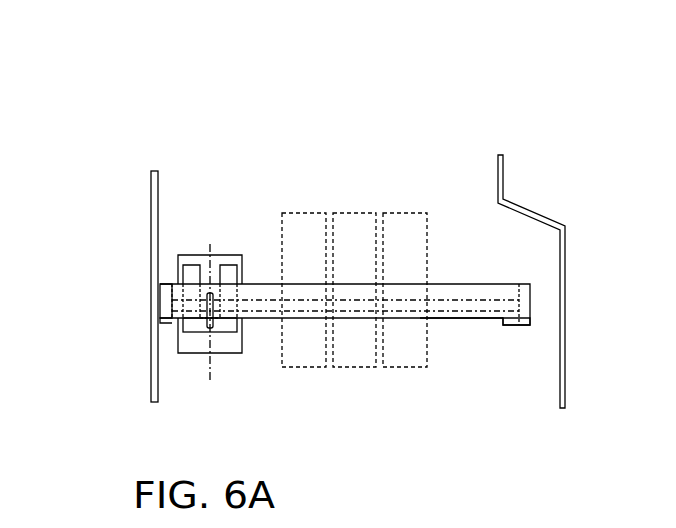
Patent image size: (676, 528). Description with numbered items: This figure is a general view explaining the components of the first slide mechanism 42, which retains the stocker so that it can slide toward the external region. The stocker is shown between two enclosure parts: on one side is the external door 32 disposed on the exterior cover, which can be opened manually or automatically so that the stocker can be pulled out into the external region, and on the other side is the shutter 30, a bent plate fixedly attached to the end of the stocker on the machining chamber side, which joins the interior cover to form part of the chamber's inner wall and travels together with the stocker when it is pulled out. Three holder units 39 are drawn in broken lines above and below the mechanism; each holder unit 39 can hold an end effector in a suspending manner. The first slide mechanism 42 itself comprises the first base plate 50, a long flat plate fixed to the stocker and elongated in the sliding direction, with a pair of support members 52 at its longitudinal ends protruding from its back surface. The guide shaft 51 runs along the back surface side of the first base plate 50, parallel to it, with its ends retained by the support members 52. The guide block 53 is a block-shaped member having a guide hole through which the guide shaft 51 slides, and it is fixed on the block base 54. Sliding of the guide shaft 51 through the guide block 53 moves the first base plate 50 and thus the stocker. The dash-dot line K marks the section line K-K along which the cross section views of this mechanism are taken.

The shutter 30 is at (540, 212).
The external door 32 is at (150, 218).
The holder unit 39 is at (398, 213).
The first slide mechanism 42 is at (377, 99).
The first base plate 50 is at (448, 284).
The guide shaft 51 is at (458, 319).
The support member 52 is at (168, 326).
The guide block 53 is at (193, 334).
The block base 54 is at (242, 341).
The line K- K is at (212, 313).